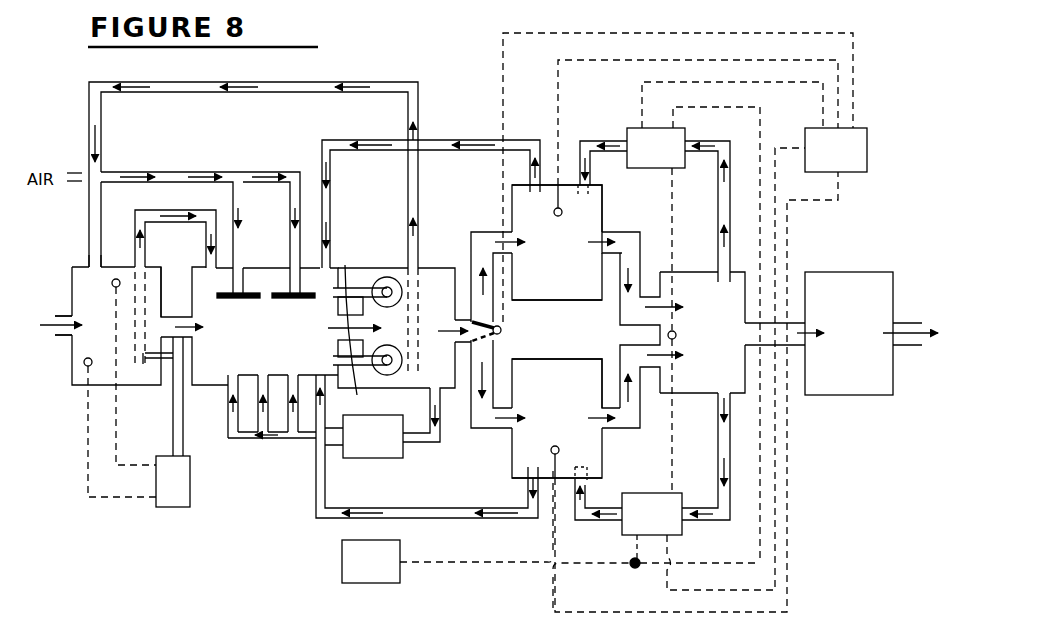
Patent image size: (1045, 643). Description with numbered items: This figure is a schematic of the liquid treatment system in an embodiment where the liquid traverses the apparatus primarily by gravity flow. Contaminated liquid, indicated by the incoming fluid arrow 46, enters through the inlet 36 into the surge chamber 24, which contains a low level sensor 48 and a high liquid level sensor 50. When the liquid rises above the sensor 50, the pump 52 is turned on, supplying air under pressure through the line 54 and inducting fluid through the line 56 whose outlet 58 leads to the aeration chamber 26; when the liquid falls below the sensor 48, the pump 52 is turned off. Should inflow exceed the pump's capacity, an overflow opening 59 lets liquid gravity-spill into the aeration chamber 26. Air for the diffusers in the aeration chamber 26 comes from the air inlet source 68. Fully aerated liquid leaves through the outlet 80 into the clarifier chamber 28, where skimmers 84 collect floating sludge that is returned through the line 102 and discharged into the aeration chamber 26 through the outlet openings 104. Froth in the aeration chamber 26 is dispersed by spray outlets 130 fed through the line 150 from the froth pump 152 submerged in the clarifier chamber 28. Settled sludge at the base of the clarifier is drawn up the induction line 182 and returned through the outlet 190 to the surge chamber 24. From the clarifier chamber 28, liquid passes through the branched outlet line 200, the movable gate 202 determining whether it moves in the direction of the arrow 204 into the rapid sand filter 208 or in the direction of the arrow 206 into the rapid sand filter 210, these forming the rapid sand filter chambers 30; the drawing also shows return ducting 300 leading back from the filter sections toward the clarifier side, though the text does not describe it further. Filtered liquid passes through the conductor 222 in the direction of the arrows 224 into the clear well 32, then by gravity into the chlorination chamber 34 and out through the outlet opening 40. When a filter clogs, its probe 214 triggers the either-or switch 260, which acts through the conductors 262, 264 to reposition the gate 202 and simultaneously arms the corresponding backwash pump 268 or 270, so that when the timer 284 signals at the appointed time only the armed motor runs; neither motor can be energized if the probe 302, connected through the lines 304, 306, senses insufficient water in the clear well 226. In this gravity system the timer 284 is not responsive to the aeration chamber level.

The surge chamber 24 is at (109, 315).
The aeration chamber 26 is at (275, 338).
The clarifier chamber 28 is at (441, 306).
The rapid sand filter chambers 30 is at (568, 254).
The clear well 32 is at (692, 382).
The chlorination chamber 34 is at (850, 280).
The inlet 36 is at (62, 338).
The outlet opening 40 is at (938, 320).
The incoming contaminated fluid arrow 46 is at (44, 316).
The low level sensor 48 is at (84, 365).
The high liquid level sensor 50 is at (112, 283).
The pump 52 is at (182, 489).
The air line 54 is at (170, 420).
The fluid induction line 56 is at (146, 308).
The outlet 58 is at (134, 219).
The overflow opening 59 is at (185, 402).
The air inlet source 68 is at (146, 171).
The aeration chamber outlet 80 is at (358, 339).
The skimmer 84 is at (385, 277).
The sludge return line 102 is at (342, 290).
The outlet openings 104 is at (332, 362).
The spray outlets 130 is at (290, 380).
The spray supply line 150 is at (262, 441).
The froth pump 152 is at (389, 446).
The induction line 182 is at (190, 97).
The sludge return line outlet 190 is at (86, 265).
The branched outlet line 200 is at (493, 430).
The movable gate 202 is at (502, 331).
The flow direction arrow 204 is at (473, 378).
The flow direction arrow 206 is at (472, 240).
The rapid sand filter 208 is at (572, 384).
The rapid sand filter 210 is at (572, 289).
The probe or sensor 214 is at (563, 212).
The conductor 222 is at (620, 350).
The flow arrows 224 is at (620, 381).
The clear well 226 is at (692, 282).
The either-or switch 260 is at (870, 152).
The conductor 262 is at (504, 43).
The conductor 264 is at (642, 106).
The backwash pump 268 is at (673, 157).
The backwash pump 270 is at (668, 523).
The timer 284 is at (387, 571).
The recirculation duct 300 is at (467, 140).
The probe 302 is at (679, 334).
The connecting line 304 is at (672, 197).
The connecting line 306 is at (672, 451).